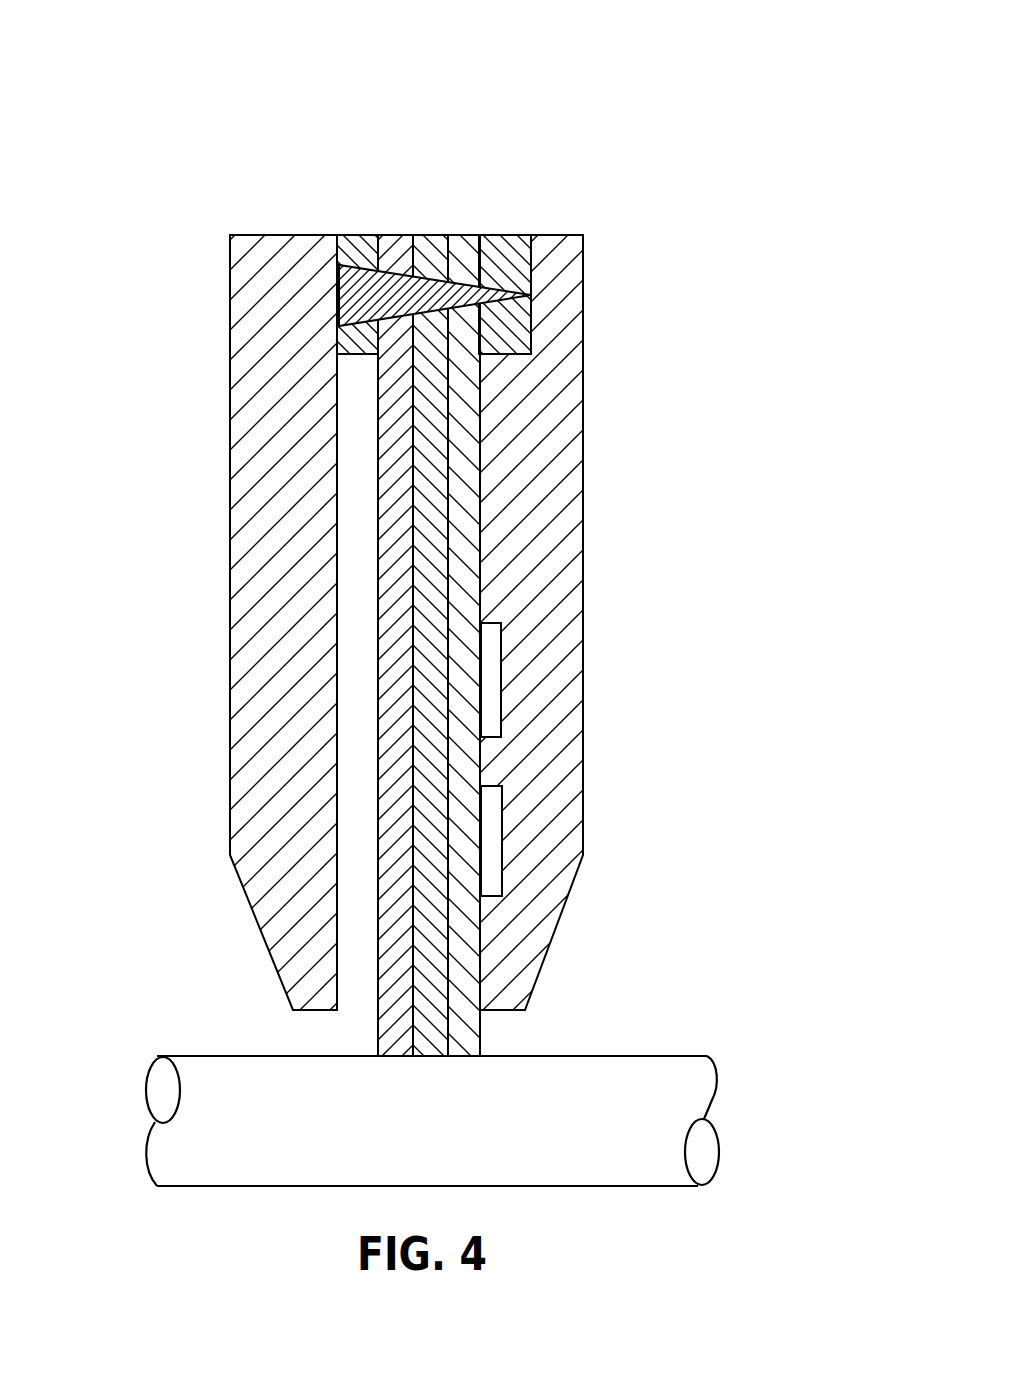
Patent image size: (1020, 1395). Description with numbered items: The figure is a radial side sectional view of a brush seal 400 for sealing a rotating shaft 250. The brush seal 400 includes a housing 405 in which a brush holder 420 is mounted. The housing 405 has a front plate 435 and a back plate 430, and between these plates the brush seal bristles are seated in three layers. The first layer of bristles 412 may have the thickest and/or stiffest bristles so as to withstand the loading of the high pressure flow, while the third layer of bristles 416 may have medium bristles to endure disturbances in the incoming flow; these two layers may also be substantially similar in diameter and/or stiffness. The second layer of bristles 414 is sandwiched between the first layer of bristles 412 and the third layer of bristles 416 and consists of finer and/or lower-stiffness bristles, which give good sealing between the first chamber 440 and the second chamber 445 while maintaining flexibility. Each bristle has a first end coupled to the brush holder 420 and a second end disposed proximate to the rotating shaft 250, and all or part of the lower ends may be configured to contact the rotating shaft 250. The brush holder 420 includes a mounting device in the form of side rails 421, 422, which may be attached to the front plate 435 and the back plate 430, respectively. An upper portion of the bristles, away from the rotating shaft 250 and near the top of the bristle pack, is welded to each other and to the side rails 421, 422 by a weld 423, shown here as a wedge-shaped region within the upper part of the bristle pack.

The brush seal 400 is at (446, 529).
The housing 405 is at (418, 622).
The first layer of bristles 412 is at (468, 613).
The second layer of bristles 414 is at (430, 556).
The third layer of bristles 416 is at (395, 488).
The brush holder 420 is at (362, 252).
The side rail 421 is at (360, 245).
The side rail 422 is at (510, 247).
The weld 423 is at (362, 290).
The back plate 430 is at (599, 622).
The front plate 435 is at (242, 422).
The first chamber 440 is at (91, 709).
The second chamber 445 is at (843, 709).
The rotating shaft 250 is at (453, 1142).